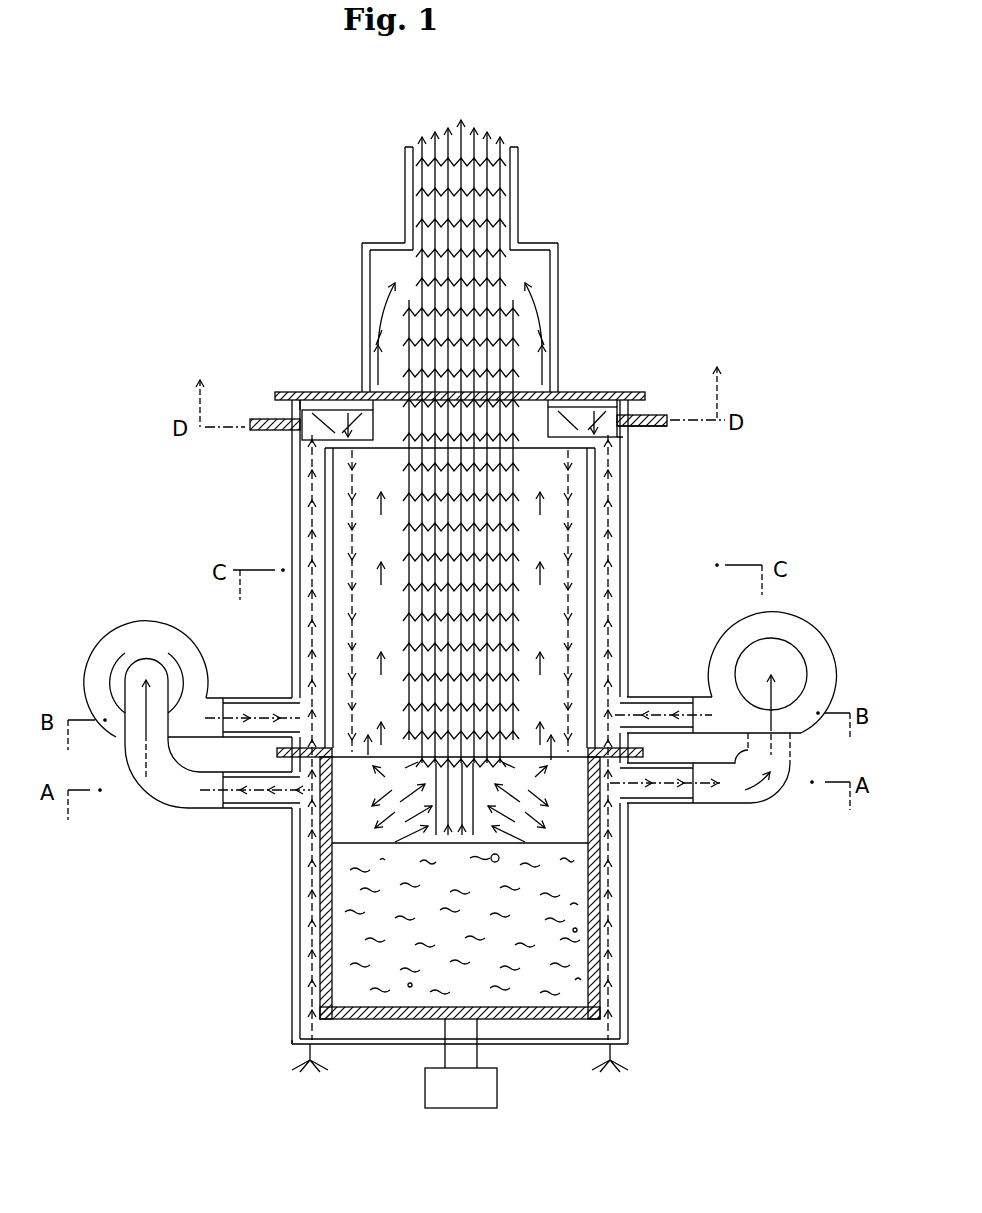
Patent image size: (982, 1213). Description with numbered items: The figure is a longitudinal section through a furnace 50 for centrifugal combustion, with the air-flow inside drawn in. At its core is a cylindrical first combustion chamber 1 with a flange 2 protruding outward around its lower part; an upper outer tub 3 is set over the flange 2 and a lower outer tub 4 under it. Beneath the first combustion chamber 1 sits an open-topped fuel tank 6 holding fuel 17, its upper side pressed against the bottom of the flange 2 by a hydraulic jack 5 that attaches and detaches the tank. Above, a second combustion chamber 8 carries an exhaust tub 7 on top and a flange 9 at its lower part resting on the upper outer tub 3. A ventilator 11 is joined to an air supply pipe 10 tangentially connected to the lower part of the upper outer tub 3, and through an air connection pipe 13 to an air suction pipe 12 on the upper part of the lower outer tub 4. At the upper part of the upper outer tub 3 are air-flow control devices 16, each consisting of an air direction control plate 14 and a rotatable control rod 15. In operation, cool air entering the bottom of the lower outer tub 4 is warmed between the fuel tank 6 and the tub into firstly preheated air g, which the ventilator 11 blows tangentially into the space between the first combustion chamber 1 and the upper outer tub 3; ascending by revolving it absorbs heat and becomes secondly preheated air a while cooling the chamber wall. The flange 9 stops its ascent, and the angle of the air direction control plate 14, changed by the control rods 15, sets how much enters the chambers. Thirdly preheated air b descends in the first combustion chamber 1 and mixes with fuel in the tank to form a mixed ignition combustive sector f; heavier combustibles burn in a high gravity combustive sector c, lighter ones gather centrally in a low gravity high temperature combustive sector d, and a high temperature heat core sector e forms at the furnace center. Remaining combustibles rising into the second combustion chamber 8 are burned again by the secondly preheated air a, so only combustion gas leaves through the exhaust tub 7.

The furnace 50 is at (318, 212).
The first combustion chamber 1 is at (337, 502).
The flange 2 is at (277, 745).
The upper outer tub 3 is at (292, 538).
The lower outer tub 4 is at (292, 949).
The hydraulic jack 5 is at (499, 1088).
The fuel tank 6 is at (597, 933).
The exhaust tub 7 is at (518, 171).
The second combustion chamber 8 is at (540, 298).
The flange 9 is at (283, 391).
The air supply pipe 10 is at (654, 690).
The ventilator 11 is at (822, 640).
The air suction pipe 12 is at (680, 757).
The air connection pipe 13 is at (752, 803).
The air direction control plate 14 is at (575, 397).
The control rod 15 is at (648, 427).
The air-flow control device 16 is at (660, 414).
The fuel 17 is at (352, 896).
The secondly preheated air a is at (613, 615).
The thirdly preheated air b is at (573, 617).
The high gravity combustive sector c is at (543, 613).
The low gravity high temperature combustive sector d is at (500, 615).
The high temperature heat core sector e is at (465, 613).
The mixed ignition combustive sector f is at (623, 823).
The firstly preheated air g is at (613, 871).